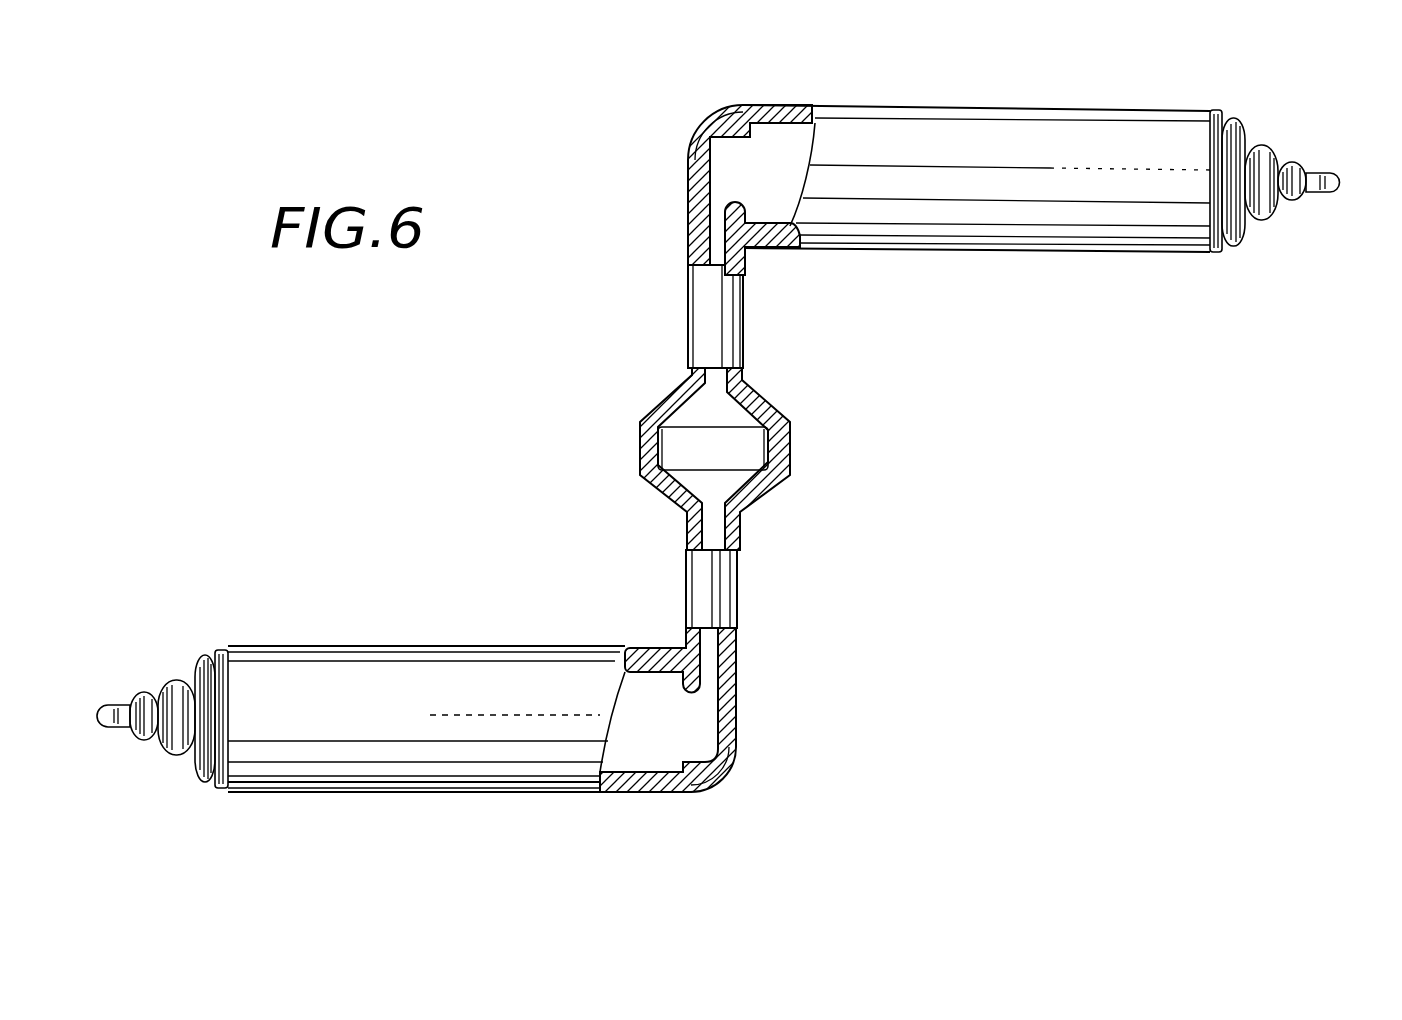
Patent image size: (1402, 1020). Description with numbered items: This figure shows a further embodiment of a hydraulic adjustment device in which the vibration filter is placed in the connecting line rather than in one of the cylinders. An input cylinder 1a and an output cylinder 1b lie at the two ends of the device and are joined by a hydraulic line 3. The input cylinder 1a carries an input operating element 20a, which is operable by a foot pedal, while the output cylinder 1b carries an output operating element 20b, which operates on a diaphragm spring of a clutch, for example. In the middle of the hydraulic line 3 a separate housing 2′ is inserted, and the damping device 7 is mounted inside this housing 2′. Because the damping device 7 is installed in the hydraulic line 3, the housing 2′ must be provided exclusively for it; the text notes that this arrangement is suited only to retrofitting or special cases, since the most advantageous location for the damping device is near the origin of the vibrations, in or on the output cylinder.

The input cylinder 1a is at (967, 126).
The output cylinder 1b is at (378, 780).
The input operating element 20a is at (1329, 163).
The output operating element 20b is at (113, 703).
The housing 2′ is at (661, 405).
The damping device 7 is at (757, 455).
The hydraulic line 3 is at (729, 586).